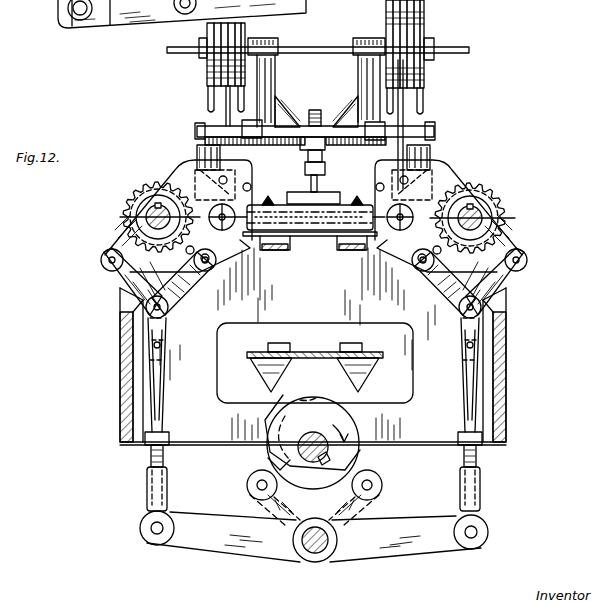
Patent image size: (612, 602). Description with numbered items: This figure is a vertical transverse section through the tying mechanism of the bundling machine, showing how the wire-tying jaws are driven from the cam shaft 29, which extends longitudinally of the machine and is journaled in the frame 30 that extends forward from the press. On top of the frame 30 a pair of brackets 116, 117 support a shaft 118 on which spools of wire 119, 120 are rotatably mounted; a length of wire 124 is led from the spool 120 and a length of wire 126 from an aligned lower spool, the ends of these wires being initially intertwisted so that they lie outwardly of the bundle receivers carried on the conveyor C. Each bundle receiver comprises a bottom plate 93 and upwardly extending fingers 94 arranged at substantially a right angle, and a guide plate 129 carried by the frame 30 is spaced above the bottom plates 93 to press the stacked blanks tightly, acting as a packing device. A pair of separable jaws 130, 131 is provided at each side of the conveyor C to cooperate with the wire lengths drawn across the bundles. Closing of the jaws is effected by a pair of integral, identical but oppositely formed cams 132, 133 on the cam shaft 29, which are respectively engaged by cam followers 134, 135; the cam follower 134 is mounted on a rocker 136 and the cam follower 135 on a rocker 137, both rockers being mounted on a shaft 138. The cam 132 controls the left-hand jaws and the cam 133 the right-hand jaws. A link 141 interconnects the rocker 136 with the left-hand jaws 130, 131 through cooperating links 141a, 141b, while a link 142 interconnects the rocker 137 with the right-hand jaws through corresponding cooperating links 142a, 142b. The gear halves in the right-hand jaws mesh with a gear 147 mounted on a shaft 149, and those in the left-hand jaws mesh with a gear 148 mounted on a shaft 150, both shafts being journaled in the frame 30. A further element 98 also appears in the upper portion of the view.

The upper arm hub 98 is at (182, 14).
The spool of wire 120 is at (422, 57).
The shaft 118 is at (332, 46).
The spool of wire 119 is at (212, 73).
The bracket 116 is at (276, 82).
The bracket 117 is at (356, 88).
The length of wire 126 is at (224, 118).
The length of wire 124 is at (404, 121).
The jaw 130 is at (235, 185).
The gear 148 is at (146, 190).
The gear 147 is at (482, 194).
The shaft 150 is at (120, 217).
The shaft 149 is at (507, 219).
The jaw 131 is at (238, 262).
The guide plate 129 is at (304, 193).
The bottom plate 93 is at (300, 236).
The upwardly extending fingers 94 is at (362, 198).
The conveyor C is at (281, 251).
The link 141a is at (128, 286).
The link 141b is at (190, 286).
The right outer link 142a is at (510, 280).
The right inner link 142b is at (458, 310).
The link 141 is at (151, 455).
The link 142 is at (478, 455).
The frame 30 is at (507, 412).
The cam 132 is at (298, 402).
The cam shaft 29 is at (326, 452).
The cam 133 is at (320, 463).
The cam follower 135 is at (256, 476).
The cam follower 134 is at (382, 478).
The rocker 136 is at (218, 555).
The rocker 137 is at (375, 556).
The shaft 138 is at (310, 560).